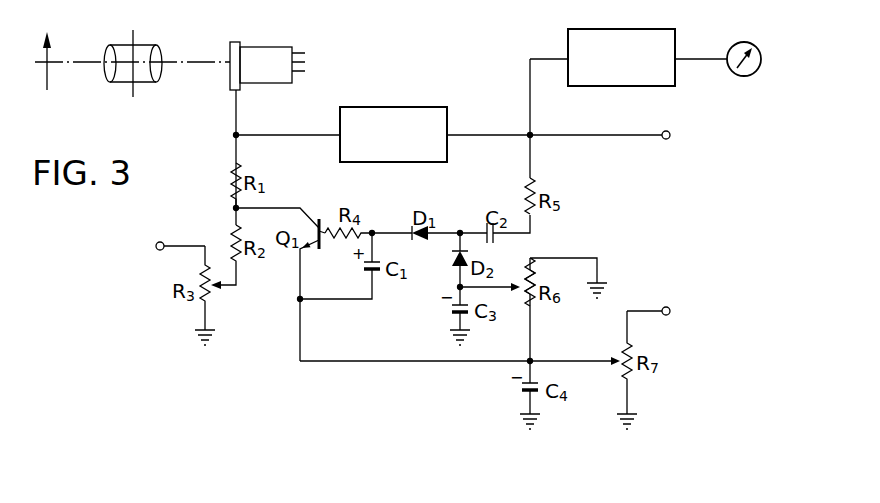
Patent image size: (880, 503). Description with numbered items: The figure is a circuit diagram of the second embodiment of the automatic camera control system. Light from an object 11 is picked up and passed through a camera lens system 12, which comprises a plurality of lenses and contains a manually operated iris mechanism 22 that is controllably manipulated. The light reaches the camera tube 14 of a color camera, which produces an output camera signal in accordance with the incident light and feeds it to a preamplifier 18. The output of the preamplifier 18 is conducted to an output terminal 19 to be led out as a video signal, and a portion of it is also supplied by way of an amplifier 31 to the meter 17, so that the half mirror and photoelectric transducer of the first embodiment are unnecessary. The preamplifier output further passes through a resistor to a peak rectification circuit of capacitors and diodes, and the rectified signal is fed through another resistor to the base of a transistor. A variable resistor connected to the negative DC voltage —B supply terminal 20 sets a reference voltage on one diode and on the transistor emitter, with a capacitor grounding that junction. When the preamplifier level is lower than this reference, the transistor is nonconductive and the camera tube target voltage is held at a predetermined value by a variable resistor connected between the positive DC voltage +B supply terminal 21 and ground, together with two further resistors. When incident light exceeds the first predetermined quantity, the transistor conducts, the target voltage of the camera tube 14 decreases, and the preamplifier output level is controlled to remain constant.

The object 11 is at (50, 42).
The camera lens system 12 is at (145, 45).
The camera tube 14 is at (273, 47).
The meter 17 is at (745, 42).
The preamplifier 18 is at (407, 107).
The output terminal 19 is at (670, 131).
The —B supply terminal 20 is at (665, 306).
The +B supply terminal 21 is at (161, 242).
The iris mechanism 22 is at (134, 88).
The amplifier 31 is at (644, 29).